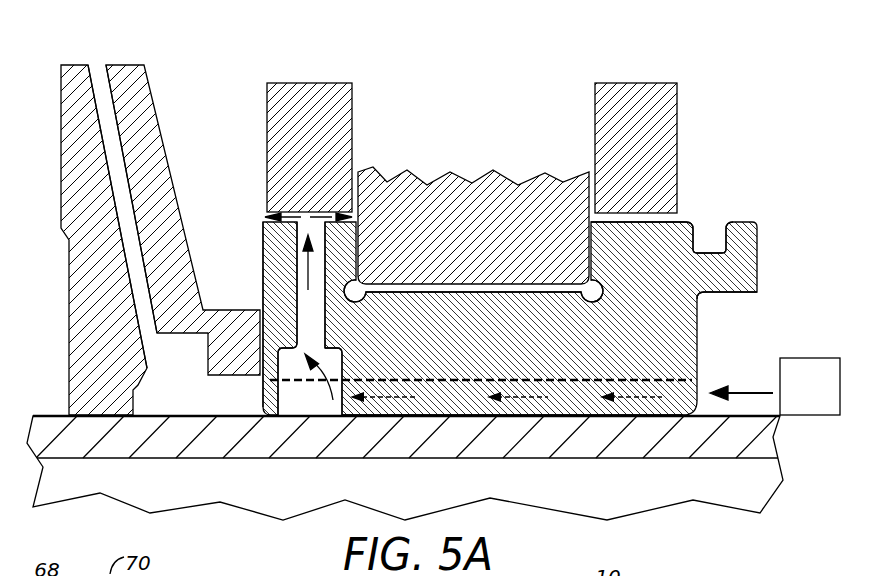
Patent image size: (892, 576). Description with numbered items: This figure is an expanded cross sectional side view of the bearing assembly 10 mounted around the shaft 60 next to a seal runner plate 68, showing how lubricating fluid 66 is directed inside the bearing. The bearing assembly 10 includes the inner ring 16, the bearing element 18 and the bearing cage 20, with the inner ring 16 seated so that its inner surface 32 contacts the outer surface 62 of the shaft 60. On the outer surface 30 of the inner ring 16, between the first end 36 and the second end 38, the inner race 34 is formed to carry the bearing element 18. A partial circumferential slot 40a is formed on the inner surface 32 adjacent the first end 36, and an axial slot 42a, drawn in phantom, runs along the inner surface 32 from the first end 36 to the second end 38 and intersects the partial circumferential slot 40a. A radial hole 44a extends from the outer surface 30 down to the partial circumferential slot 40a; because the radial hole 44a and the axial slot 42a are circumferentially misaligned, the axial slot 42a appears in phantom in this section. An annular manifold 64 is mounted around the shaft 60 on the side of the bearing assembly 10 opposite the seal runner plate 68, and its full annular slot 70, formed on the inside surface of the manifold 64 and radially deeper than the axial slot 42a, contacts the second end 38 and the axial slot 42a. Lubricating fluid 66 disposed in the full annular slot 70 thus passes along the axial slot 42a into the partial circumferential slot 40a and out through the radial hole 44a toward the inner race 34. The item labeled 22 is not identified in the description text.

The bearing assembly 10 is at (481, 280).
The inner ring 16 is at (280, 279).
The bearing element 18 is at (466, 239).
The bearing cage 20 is at (337, 133).
The top surface of housing 22 is at (714, 215).
The outer surface 30 is at (685, 220).
The inner surface 32 is at (588, 435).
The inner race 34 is at (420, 274).
The first end 36 is at (263, 250).
The second end 38 is at (697, 302).
The partial circumferential slot 40a is at (303, 398).
The axial slot 42a is at (648, 381).
The radial hole 44a is at (308, 320).
The shaft 60 is at (88, 447).
The outer surface 62 is at (48, 408).
The annular manifold 64 is at (810, 386).
The lubricating fluid 66 is at (747, 392).
The seal runner plate 68 is at (62, 95).
The full annular slot 70 is at (97, 75).